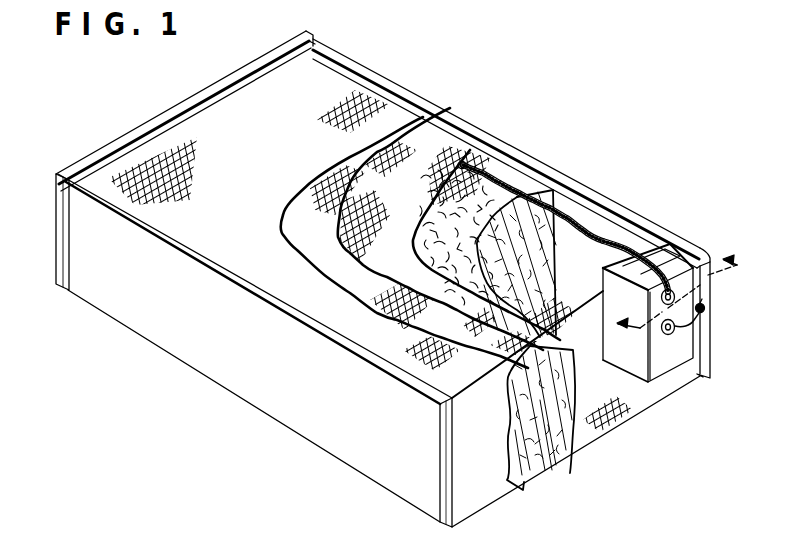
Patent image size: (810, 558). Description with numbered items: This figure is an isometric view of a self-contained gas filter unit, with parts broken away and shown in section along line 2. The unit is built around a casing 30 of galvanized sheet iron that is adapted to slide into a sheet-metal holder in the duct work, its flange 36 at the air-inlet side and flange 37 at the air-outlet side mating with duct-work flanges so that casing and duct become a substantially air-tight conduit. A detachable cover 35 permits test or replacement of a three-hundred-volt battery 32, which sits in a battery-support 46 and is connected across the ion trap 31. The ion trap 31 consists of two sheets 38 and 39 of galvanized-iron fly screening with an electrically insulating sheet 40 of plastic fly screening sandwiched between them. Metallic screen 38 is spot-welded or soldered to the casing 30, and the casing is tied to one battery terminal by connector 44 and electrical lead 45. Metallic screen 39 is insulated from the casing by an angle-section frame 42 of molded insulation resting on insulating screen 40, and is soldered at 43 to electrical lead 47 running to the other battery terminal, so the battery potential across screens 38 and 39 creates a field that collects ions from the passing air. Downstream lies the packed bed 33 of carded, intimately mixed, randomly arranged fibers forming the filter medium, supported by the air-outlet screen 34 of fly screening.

The section line 2- 2 is at (669, 286).
The casing 30 is at (95, 293).
The ion trap 31 is at (137, 153).
The battery 32 is at (670, 363).
The packed bed 33 is at (550, 186).
The air-outlet screen 34 is at (605, 419).
The detachable cover 35 is at (473, 505).
The flange 36 is at (323, 52).
The flange 37 is at (700, 376).
The metallic screen 38 is at (380, 100).
The metallic screen 39 is at (457, 140).
The insulating sheet 40 is at (420, 128).
The angle-section frame 42 is at (517, 377).
The spot-welded or soldered connection 43 is at (463, 160).
The connector 44 is at (704, 308).
The electrical lead 45 is at (677, 329).
The battery-support 46 is at (638, 367).
The electrical lead 47 is at (617, 237).